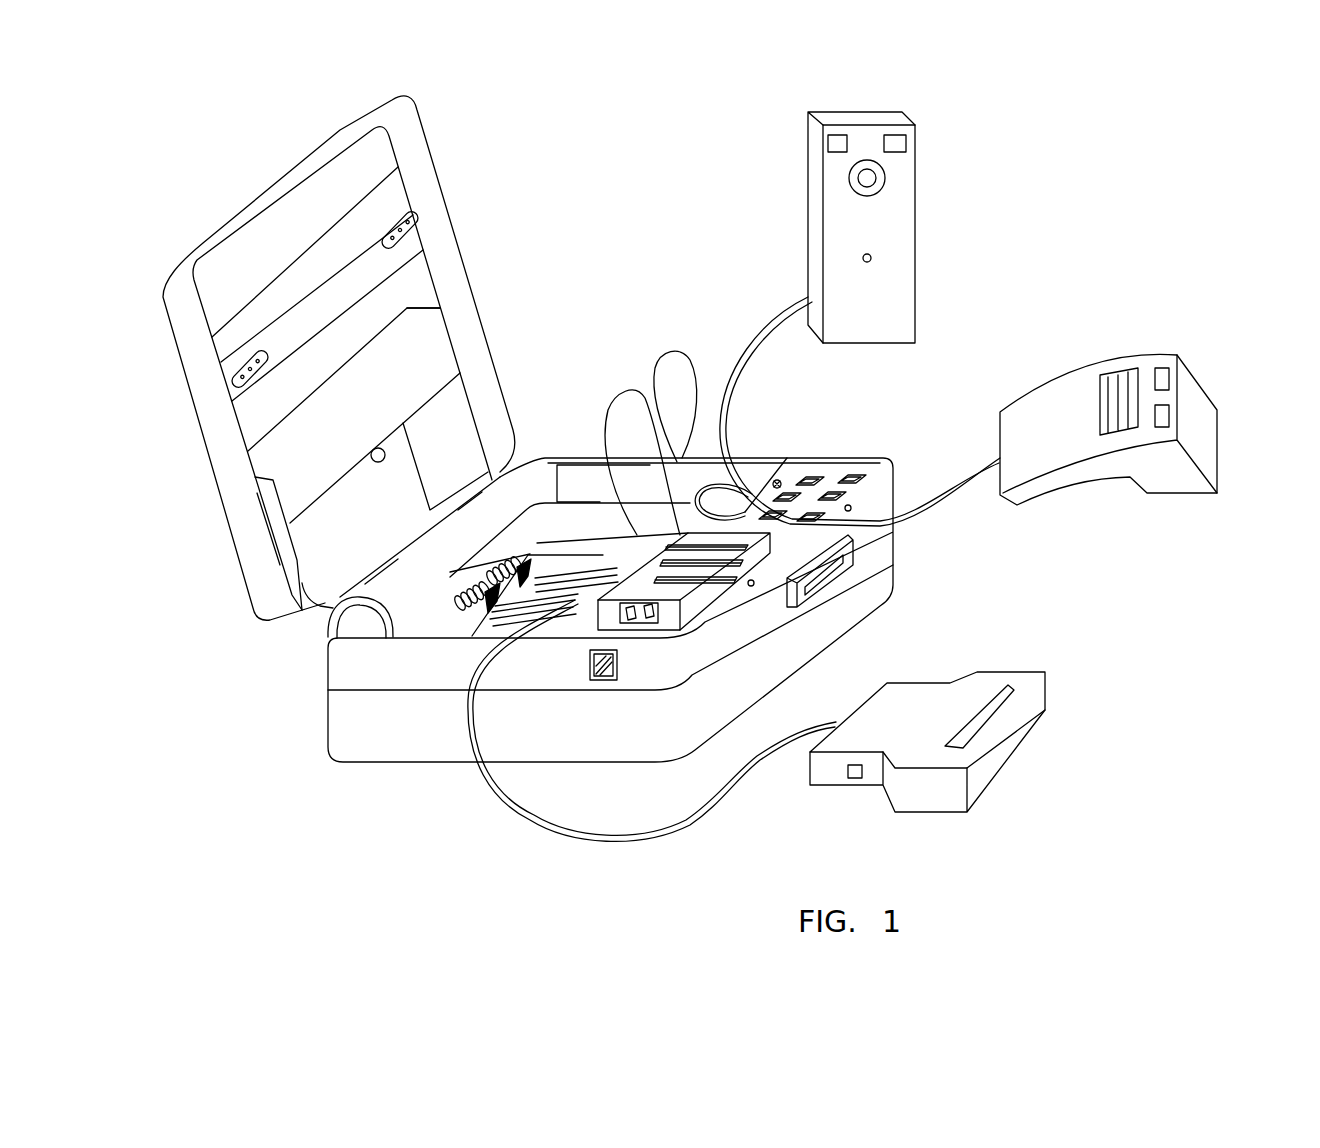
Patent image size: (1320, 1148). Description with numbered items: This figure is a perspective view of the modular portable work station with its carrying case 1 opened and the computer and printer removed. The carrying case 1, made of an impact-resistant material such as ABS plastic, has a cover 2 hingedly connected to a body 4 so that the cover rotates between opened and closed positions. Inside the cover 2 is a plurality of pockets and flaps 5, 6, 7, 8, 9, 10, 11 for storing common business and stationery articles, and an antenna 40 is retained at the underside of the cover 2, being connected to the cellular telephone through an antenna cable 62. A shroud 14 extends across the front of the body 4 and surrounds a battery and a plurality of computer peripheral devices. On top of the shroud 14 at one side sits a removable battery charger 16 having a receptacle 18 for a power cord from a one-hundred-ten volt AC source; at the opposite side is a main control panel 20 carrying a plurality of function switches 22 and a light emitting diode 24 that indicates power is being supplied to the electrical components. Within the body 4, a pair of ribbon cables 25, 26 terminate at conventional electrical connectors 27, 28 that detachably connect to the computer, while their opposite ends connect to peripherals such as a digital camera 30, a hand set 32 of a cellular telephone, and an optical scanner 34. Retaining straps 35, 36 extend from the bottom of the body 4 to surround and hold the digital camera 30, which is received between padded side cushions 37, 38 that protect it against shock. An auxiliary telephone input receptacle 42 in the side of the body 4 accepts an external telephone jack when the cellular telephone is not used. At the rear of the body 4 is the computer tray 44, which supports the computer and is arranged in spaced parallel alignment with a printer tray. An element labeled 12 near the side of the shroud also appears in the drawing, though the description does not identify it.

The carrying case 1 is at (313, 753).
The cover 2 is at (203, 403).
The body 4 is at (383, 762).
The pocket or flap 5 is at (230, 313).
The pocket or flap 6 is at (283, 297).
The pocket or flap 7 is at (342, 287).
The pocket or flap 8 is at (320, 380).
The pocket or flap 9 is at (310, 497).
The pocket or flap 10 is at (363, 450).
The pocket or flap 11 is at (427, 395).
The connector 12 is at (827, 580).
The shroud 14 is at (735, 595).
The battery charger 16 is at (708, 598).
The receptacle 18 is at (640, 630).
The main control panel 20 is at (793, 472).
The function switches 22 is at (853, 477).
The light emitting diode 24 is at (777, 480).
The ribbon cable 25 is at (513, 643).
The ribbon cable 26 is at (560, 590).
The electrical connector 27 is at (450, 613).
The electrical connector 28 is at (517, 550).
The digital camera 30 is at (893, 207).
The hand set 32 is at (1070, 378).
The optical scanner 34 is at (990, 670).
The retaining strap 35 is at (620, 433).
The retaining strap 36 is at (677, 397).
The side cushion 37 is at (617, 533).
The side cushion 38 is at (587, 482).
The antenna 40 is at (288, 565).
The auxiliary telephone input receptacle 42 is at (603, 685).
The computer tray 44 is at (620, 567).
The antenna cable 62 is at (303, 615).